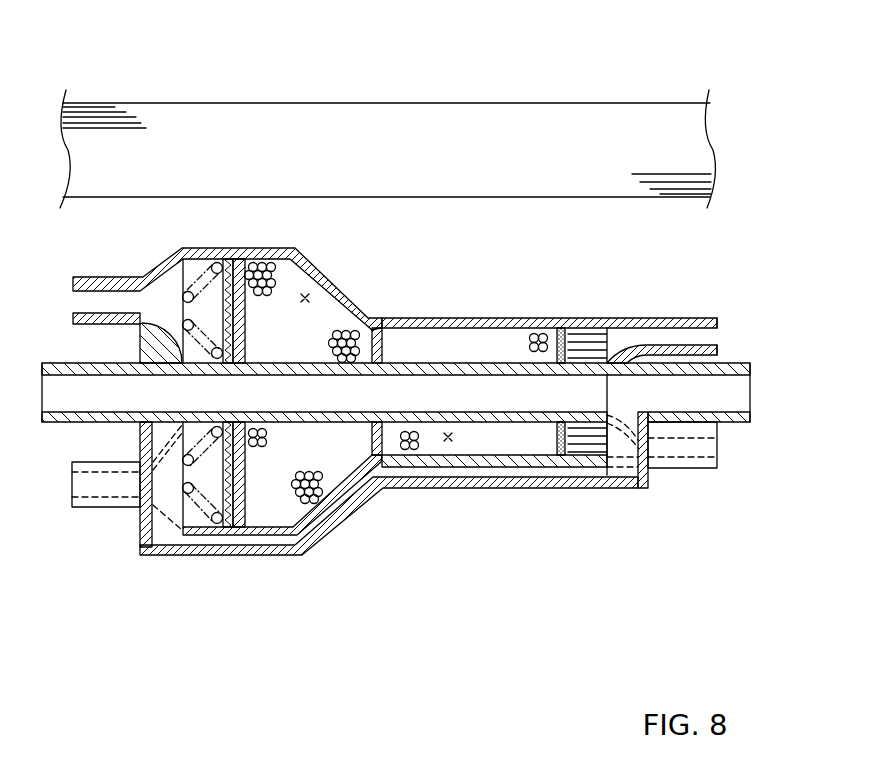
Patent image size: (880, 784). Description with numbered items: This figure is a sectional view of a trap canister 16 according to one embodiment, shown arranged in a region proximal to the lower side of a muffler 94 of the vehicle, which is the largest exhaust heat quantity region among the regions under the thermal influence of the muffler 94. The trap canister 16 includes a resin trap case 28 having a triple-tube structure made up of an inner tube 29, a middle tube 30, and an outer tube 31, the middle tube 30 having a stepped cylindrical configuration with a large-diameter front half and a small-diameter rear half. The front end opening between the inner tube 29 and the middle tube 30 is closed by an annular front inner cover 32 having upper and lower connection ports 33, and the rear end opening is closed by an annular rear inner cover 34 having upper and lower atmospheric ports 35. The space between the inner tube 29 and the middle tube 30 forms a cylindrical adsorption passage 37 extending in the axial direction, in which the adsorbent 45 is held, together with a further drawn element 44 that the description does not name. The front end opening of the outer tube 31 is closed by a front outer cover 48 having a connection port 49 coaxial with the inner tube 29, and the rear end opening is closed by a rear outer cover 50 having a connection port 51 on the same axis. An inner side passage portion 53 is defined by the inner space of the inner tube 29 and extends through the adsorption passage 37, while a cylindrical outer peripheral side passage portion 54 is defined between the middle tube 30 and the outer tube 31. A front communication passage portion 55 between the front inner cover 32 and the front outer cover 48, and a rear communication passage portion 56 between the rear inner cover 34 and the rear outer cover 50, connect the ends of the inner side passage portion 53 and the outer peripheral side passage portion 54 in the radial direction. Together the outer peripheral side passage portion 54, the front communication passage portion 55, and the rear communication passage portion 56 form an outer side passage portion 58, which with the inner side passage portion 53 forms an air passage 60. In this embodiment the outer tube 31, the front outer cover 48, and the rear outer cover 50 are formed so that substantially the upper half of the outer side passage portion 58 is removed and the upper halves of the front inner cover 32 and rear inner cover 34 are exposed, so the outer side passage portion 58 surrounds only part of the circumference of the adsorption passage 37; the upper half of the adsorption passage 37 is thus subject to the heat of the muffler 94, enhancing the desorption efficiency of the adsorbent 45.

The muffler 94 is at (463, 140).
The trap canister 16 is at (582, 265).
The trap case 28 is at (506, 305).
The inner tube 29 is at (428, 363).
The middle tube 30 is at (471, 318).
The outer tube 31 is at (557, 467).
The front inner cover 32 is at (152, 277).
The connection port 33 is at (93, 280).
The rear inner cover 34 is at (617, 318).
The atmospheric port 35 is at (678, 318).
The adsorption passage 37 is at (448, 441).
The particulate material 44 is at (306, 297).
The adsorbent 45 is at (345, 330).
The front outer cover 48 is at (140, 522).
The connection port 49 is at (56, 365).
The rear outer cover 50 is at (643, 460).
The connection port 51 is at (728, 422).
The inner side passage portion 53 is at (505, 395).
The outer peripheral side passage portion 54 is at (363, 490).
The front communication passage portion 55 is at (163, 523).
The rear communication passage portion 56 is at (618, 443).
The outer side passage portion 58 is at (267, 537).
The air passage 60 is at (165, 532).